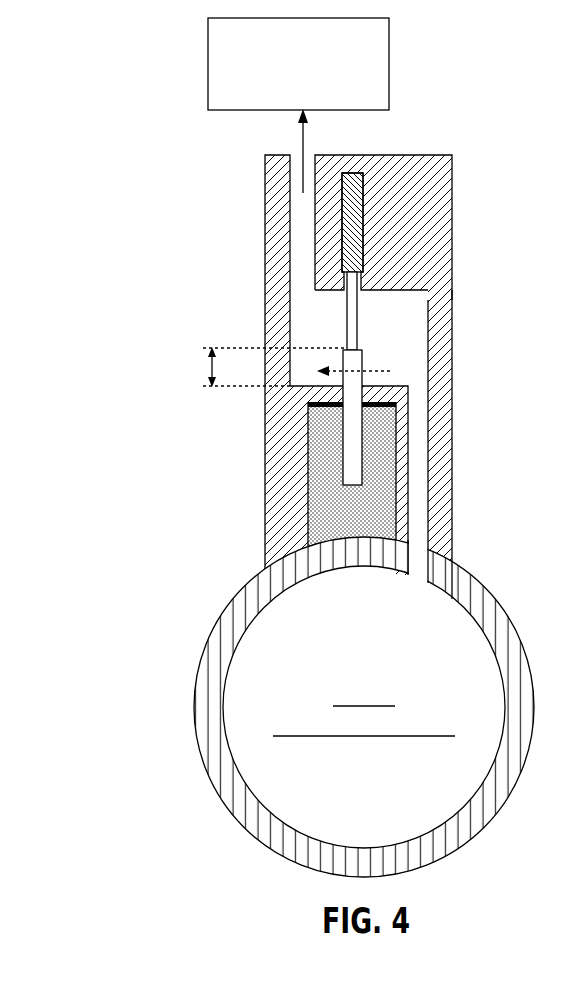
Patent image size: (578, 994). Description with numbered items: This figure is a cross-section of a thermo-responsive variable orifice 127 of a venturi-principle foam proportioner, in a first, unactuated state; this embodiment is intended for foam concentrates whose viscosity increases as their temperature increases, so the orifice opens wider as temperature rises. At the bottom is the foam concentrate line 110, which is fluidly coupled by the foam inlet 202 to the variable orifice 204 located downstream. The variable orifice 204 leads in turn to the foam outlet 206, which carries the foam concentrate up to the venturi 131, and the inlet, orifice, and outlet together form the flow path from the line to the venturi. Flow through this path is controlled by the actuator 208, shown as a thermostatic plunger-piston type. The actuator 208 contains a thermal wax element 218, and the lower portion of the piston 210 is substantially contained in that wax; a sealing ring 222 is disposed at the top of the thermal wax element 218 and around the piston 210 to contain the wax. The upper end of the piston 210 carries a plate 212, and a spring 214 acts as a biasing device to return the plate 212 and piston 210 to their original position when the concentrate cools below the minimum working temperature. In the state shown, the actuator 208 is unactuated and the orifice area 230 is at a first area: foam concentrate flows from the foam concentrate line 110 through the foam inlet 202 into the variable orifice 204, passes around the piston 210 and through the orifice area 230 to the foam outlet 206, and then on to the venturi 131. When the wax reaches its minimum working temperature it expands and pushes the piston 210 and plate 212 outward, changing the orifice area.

The foam concentrate line 110 is at (243, 702).
The thermo-responsive variable orifice 127 is at (160, 122).
The venturi 131 is at (389, 62).
The foam inlet 202 is at (422, 532).
The variable orifice 204 is at (382, 352).
The foam outlet 206 is at (307, 155).
The actuator 208 is at (108, 447).
The piston 210 is at (350, 415).
The plate 212 is at (362, 293).
The spring 214 is at (355, 202).
The thermal wax element 218 is at (345, 497).
The sealing ring 222 is at (400, 403).
The orifice area 230 is at (242, 367).